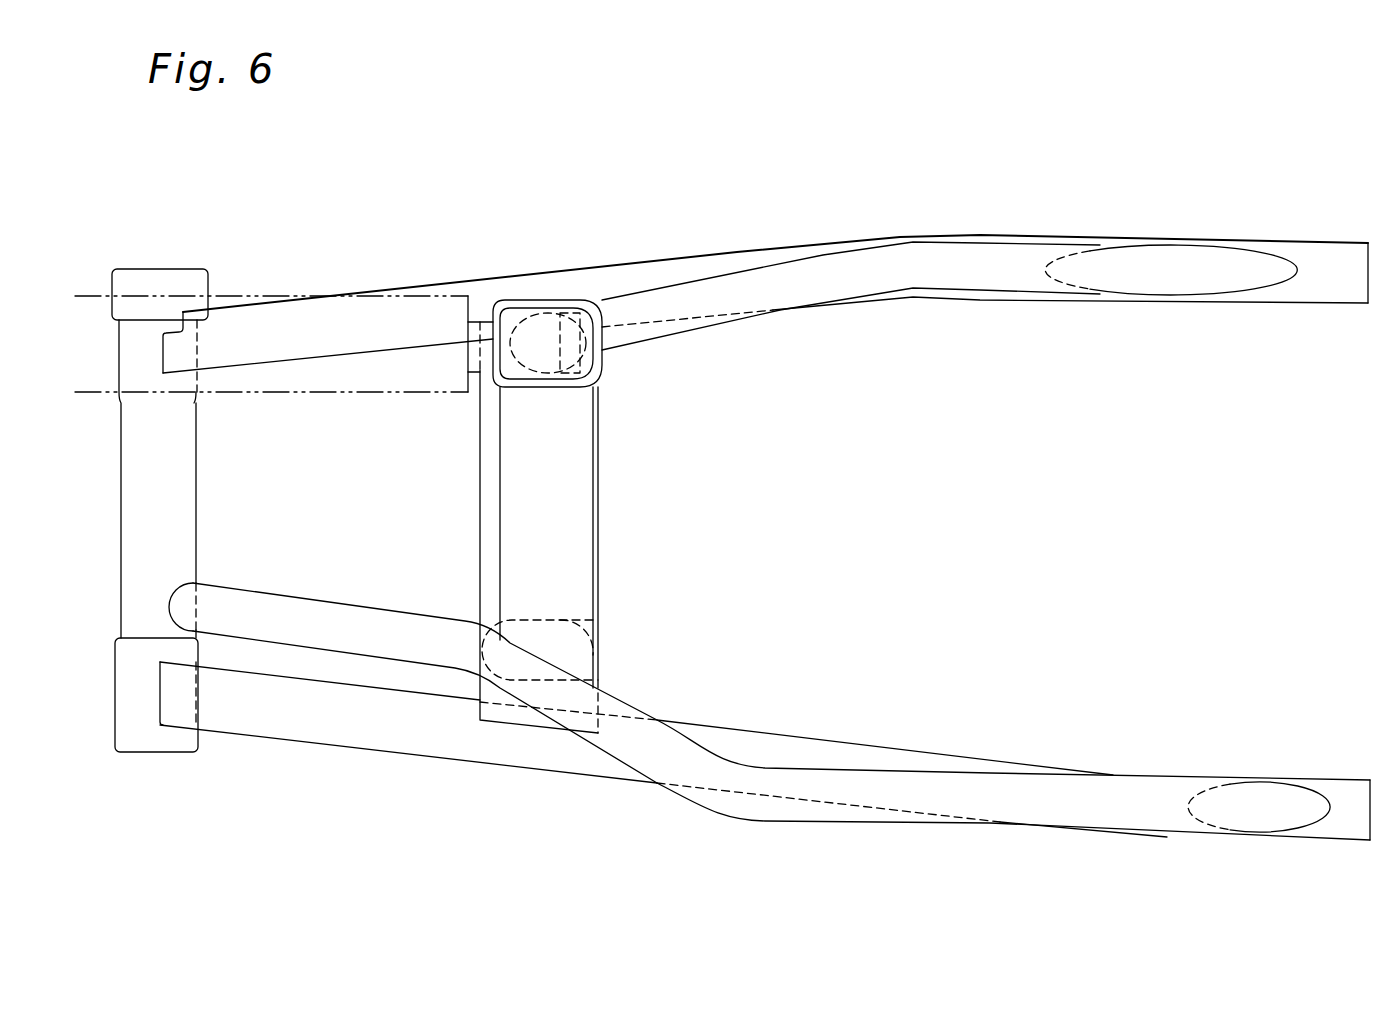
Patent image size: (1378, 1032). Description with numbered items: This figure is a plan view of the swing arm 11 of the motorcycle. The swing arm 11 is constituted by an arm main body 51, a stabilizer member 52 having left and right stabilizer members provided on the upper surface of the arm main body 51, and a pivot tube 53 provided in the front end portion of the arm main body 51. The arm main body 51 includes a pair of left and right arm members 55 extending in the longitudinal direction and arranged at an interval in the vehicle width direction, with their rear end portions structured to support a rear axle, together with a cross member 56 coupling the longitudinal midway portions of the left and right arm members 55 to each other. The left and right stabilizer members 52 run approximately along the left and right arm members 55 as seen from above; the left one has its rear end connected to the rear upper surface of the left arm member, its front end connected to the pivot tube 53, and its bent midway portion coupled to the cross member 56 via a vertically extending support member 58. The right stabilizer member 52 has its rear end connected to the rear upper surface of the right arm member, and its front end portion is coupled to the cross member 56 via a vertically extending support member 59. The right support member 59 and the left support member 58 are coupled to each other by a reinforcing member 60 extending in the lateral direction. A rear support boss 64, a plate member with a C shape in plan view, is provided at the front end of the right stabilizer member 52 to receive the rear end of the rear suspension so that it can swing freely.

The swing arm 11 is at (480, 185).
The arm main body 51 is at (730, 246).
The stabilizer member 52 is at (720, 860).
The pivot tube 53 is at (120, 480).
The arm member 55 is at (655, 262).
The cross member 56 is at (482, 567).
The support member 58 is at (557, 618).
The support member 59 is at (557, 388).
The reinforcing member 60 is at (500, 497).
The rear support boss 64 is at (528, 300).